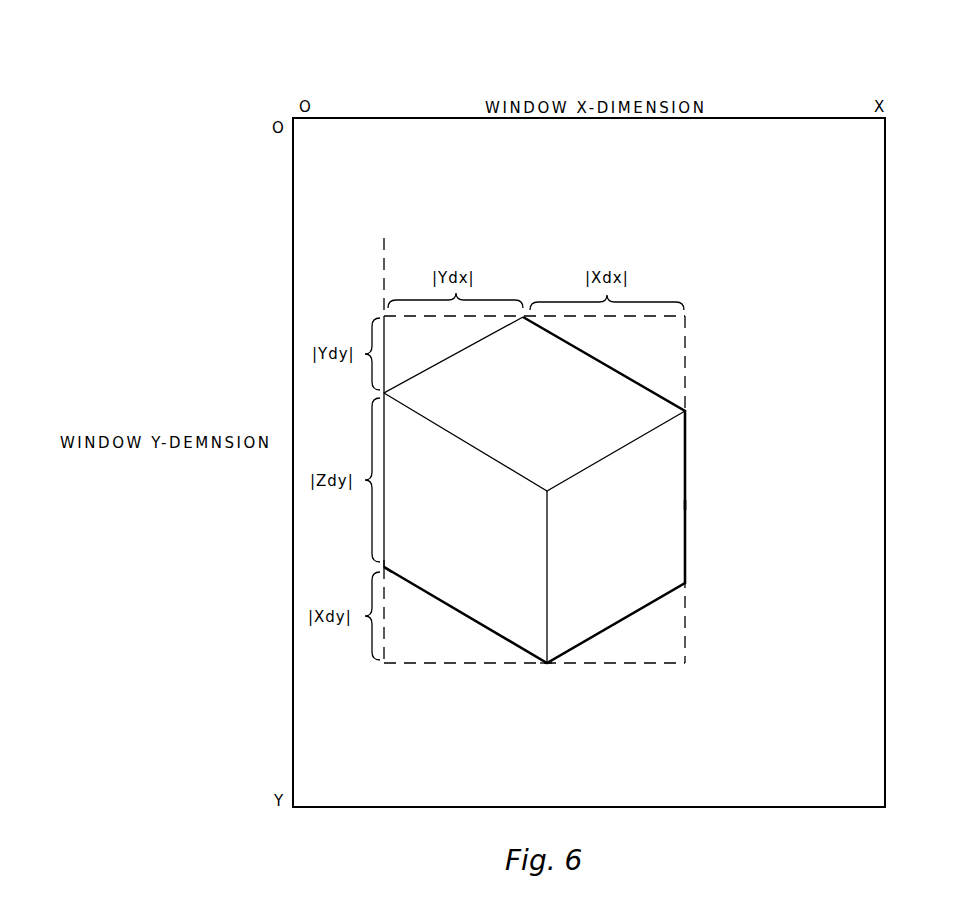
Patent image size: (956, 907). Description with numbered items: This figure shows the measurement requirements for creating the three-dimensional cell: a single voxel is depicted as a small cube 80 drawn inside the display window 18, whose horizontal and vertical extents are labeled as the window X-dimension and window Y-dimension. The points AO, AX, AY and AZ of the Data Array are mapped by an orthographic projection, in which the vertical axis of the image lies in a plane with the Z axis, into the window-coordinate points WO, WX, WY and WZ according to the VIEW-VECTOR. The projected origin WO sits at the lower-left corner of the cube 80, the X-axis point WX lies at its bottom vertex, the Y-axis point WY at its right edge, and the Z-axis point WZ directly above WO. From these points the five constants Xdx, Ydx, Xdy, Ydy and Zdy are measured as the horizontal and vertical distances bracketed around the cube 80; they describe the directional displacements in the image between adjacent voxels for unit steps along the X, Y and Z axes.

The display window 18 is at (523, 64).
The object bounding cube 80 is at (687, 458).
The projected Z-axis point WZ is at (381, 266).
The projected origin point WO is at (400, 562).
The projected Y-axis point WY is at (688, 505).
The projected X-axis point WX is at (552, 668).